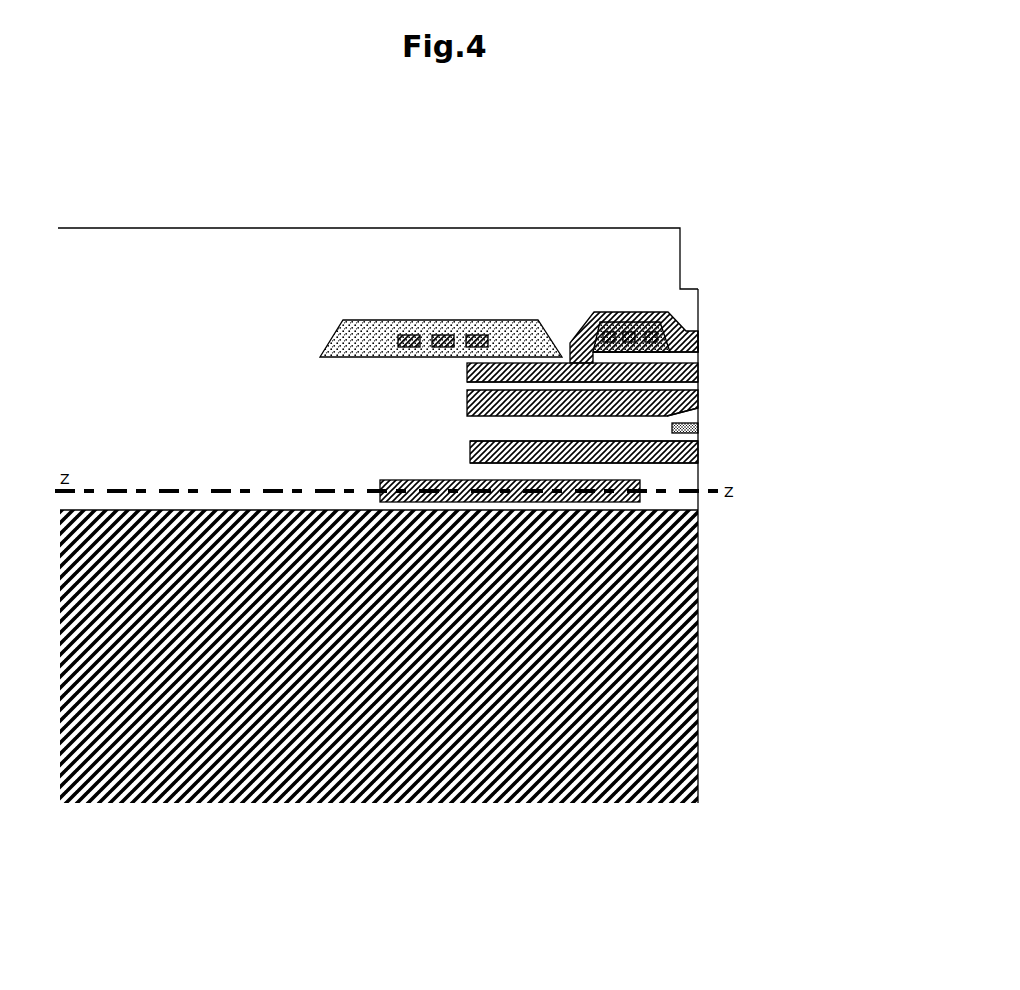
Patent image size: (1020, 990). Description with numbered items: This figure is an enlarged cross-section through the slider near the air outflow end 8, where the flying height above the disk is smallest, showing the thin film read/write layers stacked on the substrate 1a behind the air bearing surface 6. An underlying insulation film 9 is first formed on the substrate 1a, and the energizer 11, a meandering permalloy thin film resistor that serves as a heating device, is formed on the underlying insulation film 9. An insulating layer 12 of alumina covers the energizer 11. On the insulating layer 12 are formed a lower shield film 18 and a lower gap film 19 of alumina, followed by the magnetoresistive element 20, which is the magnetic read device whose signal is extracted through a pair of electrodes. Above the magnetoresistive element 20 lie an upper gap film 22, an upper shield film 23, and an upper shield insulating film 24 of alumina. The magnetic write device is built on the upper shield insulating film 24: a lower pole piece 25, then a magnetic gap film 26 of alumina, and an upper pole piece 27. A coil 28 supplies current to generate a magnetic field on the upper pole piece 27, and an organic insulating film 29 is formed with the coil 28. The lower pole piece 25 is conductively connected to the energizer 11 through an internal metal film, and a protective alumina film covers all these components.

The substrate 1a is at (157, 752).
The air bearing surface 6 is at (698, 618).
The air outflow end 8 is at (478, 228).
The underlying insulation film 9 is at (698, 502).
The energizer 11 is at (410, 480).
The insulating layer 12 is at (700, 466).
The lower shield film 18 is at (700, 453).
The lower gap film 19 is at (700, 437).
The magnetoresistive element 20 is at (700, 427).
The upper gap film 22 is at (700, 417).
The upper shield film 23 is at (700, 404).
The upper shield insulating film 24 is at (700, 382).
The lower pole piece 25 is at (700, 370).
The magnetic gap film 26 is at (700, 352).
The upper pole piece 27 is at (592, 312).
The coil 28 is at (665, 312).
The organic insulating film 29 is at (620, 312).